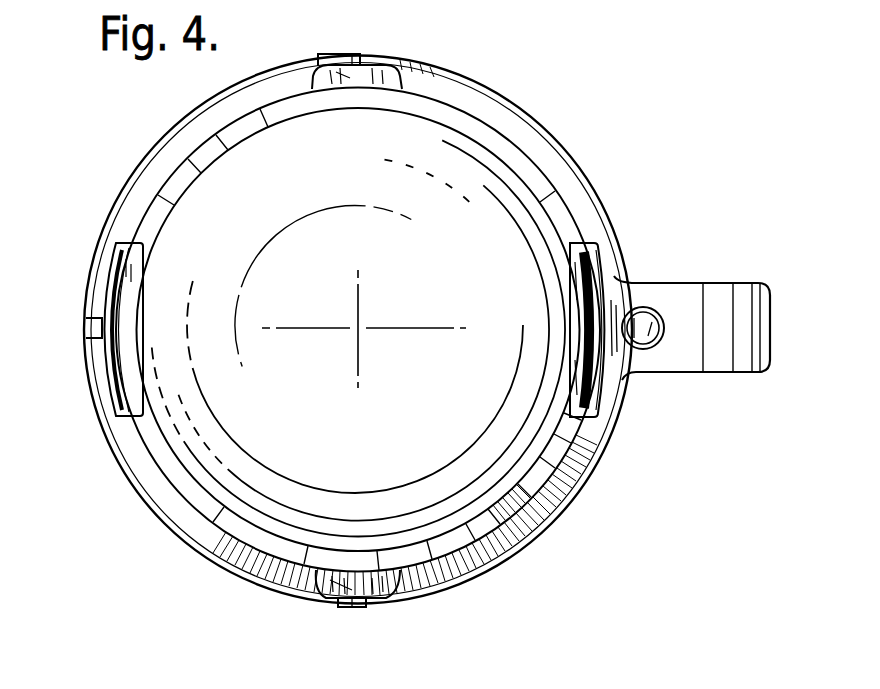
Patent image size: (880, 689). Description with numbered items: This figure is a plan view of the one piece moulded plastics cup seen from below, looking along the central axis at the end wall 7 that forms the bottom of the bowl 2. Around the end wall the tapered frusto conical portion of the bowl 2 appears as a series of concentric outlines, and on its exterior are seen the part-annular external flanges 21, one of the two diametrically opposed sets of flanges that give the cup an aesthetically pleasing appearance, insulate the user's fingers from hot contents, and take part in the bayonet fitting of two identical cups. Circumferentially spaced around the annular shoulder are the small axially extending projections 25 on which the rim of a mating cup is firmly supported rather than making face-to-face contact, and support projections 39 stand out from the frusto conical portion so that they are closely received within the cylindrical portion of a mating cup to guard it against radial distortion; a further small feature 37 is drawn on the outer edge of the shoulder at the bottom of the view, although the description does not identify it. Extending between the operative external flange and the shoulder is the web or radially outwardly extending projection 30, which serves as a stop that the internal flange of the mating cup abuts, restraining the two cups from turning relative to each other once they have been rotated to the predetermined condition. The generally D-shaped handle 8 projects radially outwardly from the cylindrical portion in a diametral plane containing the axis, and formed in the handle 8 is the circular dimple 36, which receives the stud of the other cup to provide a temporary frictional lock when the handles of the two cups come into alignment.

The external flanges 21 is at (112, 224).
The axially extending projections 25 is at (362, 62).
The support projections 39 is at (324, 66).
The notch 37 is at (386, 606).
The end wall 7 is at (314, 285).
The bowl 2 is at (356, 332).
The handle 8 is at (716, 300).
The projection 30 is at (622, 344).
The dimple 36 is at (662, 338).